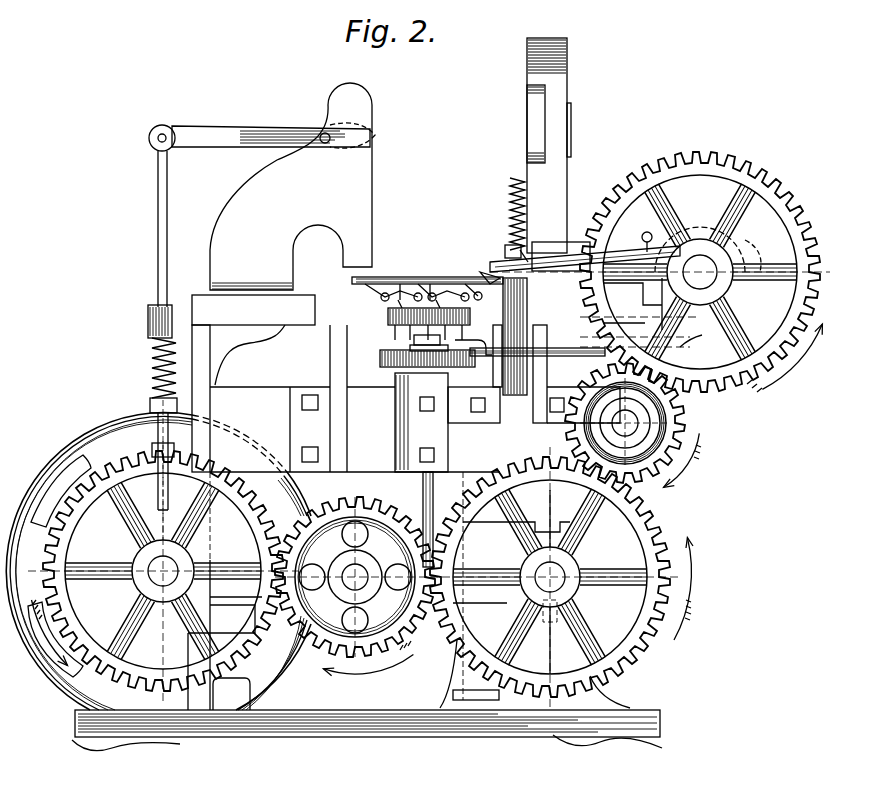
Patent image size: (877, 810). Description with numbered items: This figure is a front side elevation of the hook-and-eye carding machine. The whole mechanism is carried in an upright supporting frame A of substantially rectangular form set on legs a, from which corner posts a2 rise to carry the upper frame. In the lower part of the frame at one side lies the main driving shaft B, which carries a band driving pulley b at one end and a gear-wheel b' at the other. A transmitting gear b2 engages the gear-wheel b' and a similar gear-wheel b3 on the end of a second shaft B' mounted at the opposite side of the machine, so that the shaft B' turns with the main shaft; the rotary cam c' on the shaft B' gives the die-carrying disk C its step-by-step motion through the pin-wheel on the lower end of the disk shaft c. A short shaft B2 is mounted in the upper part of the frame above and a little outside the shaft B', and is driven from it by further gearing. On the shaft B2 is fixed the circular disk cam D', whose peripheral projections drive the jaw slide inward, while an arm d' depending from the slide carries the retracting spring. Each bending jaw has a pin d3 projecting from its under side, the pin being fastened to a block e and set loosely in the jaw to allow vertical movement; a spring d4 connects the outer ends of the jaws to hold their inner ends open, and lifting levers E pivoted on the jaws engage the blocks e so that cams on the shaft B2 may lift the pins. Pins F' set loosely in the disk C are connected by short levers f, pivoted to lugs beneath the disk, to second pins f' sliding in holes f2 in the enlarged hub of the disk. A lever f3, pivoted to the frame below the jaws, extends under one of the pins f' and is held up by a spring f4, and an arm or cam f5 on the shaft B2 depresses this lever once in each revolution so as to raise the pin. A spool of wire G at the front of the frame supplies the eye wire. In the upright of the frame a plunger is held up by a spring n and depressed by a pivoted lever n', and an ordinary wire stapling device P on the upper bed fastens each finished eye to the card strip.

The upright supporting frame A is at (367, 737).
The legs a is at (150, 738).
The corner posts a2 is at (446, 417).
The main driving shaft B is at (163, 571).
The shaft B' is at (561, 577).
The short shaft B2 is at (702, 272).
The band driving pulley b is at (158, 561).
The gear-wheel b' is at (68, 634).
The transmitting gear b2 is at (378, 512).
The gear-wheel b3 is at (646, 606).
The die carrying disk C is at (414, 278).
The shaft c is at (426, 519).
The rotary cam c' is at (483, 272).
The circular disk cam D' is at (700, 229).
The arm d' is at (571, 257).
The pins d3 is at (508, 246).
The spring d4 is at (647, 233).
The lifting levers E is at (566, 240).
The blocks e is at (522, 250).
The lever F' is at (261, 331).
The short levers f is at (412, 327).
The second pin f' is at (420, 346).
The holes f2 is at (478, 335).
The lever f3 is at (598, 356).
The spring f4 is at (686, 409).
The arm or cam f5 is at (803, 290).
The spool of wire G is at (522, 305).
The spring n is at (501, 214).
The pivoted lever n' is at (526, 145).
The wire stapling device P is at (282, 204).